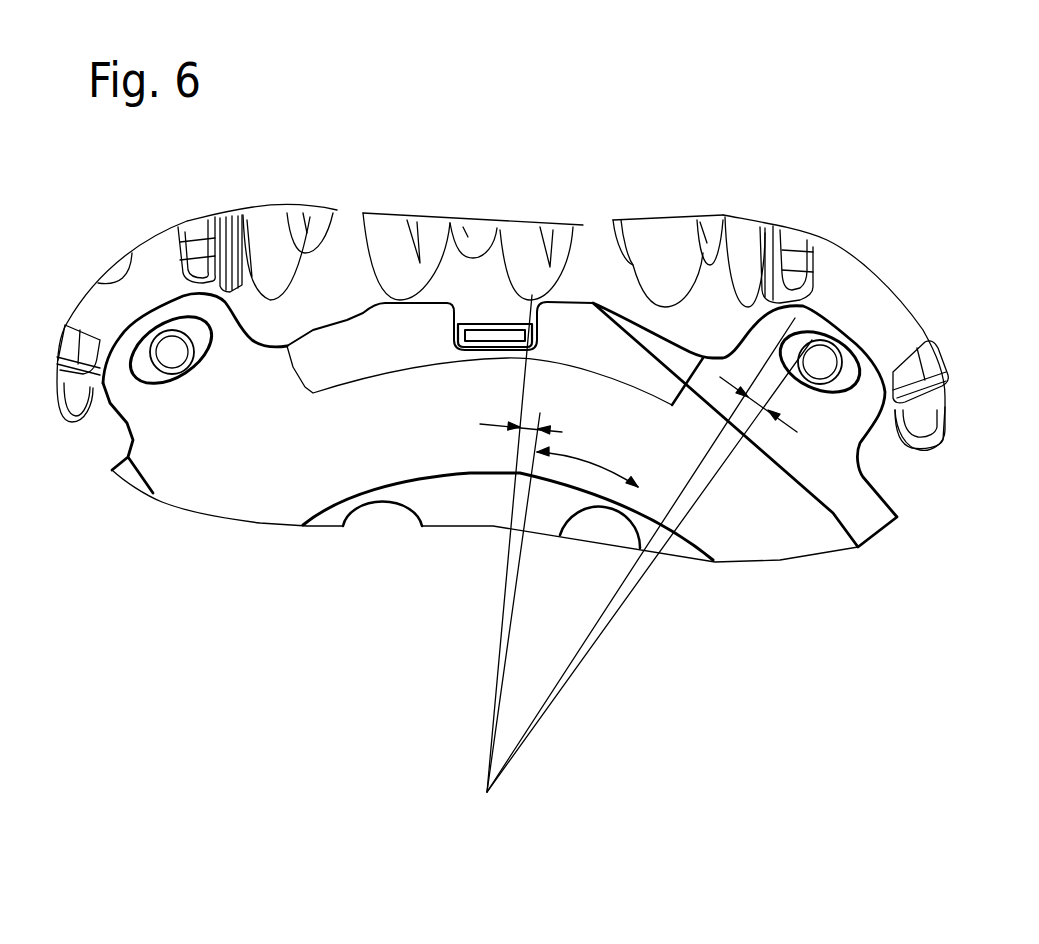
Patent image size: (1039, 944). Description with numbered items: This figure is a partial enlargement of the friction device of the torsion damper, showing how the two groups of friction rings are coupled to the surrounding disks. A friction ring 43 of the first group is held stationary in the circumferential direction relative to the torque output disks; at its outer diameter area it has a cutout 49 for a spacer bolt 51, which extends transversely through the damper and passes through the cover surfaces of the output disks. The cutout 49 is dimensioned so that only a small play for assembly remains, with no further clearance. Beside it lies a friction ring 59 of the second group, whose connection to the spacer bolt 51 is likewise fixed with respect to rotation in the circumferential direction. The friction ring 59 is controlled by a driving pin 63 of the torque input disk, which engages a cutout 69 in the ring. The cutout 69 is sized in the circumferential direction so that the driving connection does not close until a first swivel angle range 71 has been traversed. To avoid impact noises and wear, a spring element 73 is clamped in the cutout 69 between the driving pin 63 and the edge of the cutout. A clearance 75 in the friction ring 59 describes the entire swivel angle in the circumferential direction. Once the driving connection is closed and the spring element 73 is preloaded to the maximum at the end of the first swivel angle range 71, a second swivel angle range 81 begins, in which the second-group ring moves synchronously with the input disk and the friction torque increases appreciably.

The friction ring 43 is at (355, 355).
The cutout 49 is at (489, 306).
The spacer bolt 51 is at (466, 318).
The friction ring 59 is at (793, 508).
The driving pin 63 is at (821, 355).
The cutout 69 is at (840, 388).
The first swivel angle range 71 is at (522, 420).
The spring element 73 is at (198, 362).
The clearance 75 is at (600, 375).
The second swivel angle range 81 is at (487, 792).